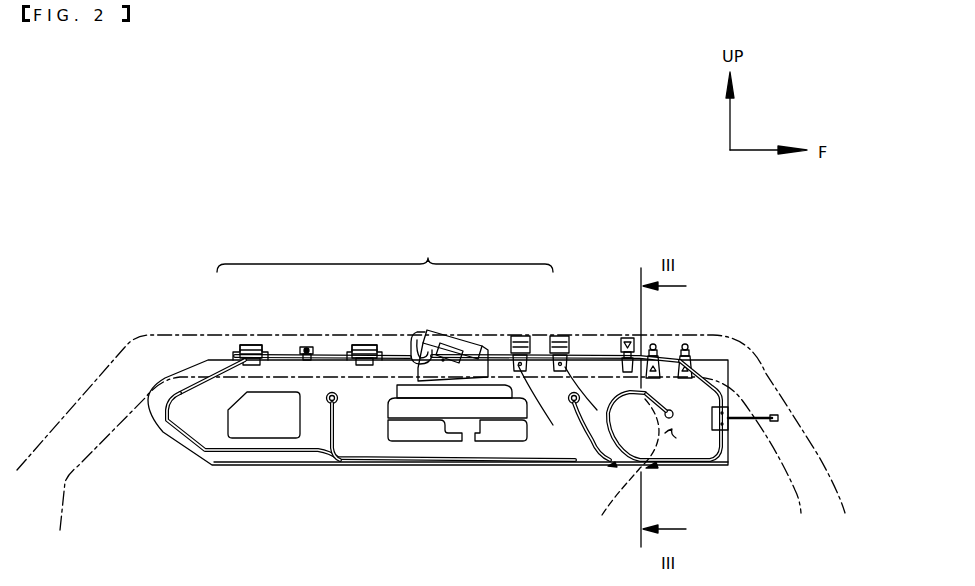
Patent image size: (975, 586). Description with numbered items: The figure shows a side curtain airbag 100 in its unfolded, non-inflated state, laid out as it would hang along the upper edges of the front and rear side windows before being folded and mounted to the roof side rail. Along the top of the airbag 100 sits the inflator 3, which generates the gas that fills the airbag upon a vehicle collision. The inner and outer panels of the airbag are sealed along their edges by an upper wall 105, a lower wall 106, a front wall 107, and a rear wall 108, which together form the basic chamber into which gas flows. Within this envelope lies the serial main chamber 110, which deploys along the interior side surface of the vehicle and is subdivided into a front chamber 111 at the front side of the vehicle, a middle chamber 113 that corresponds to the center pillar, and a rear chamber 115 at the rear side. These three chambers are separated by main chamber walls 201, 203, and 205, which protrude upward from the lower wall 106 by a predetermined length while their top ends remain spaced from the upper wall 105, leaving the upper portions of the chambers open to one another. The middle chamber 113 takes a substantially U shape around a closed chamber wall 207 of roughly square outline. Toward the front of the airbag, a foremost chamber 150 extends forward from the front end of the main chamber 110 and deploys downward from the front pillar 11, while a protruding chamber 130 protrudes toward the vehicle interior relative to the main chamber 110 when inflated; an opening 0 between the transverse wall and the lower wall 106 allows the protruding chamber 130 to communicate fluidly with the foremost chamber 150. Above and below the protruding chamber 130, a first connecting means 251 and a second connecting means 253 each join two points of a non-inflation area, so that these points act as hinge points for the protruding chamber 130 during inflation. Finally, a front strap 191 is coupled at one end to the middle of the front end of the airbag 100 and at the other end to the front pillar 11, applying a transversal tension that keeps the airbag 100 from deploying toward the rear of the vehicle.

The side curtain airbag 100 is at (591, 334).
The main chamber 110 is at (385, 253).
The rear chamber 115 is at (225, 393).
The inflator 3 is at (430, 333).
The middle chamber 113 is at (514, 350).
The front chamber 111 is at (555, 350).
The lower wall 106 is at (603, 357).
The rear wall 108 is at (147, 400).
The front pillar 11 is at (797, 445).
The upper wall 105 is at (478, 463).
The closed chamber wall 207 is at (418, 442).
The main chamber wall 205 is at (318, 434).
The main chamber wall 203 is at (568, 434).
The foremost chamber 150 is at (733, 405).
The protruding chamber 130 is at (639, 425).
The front wall 107 is at (700, 415).
The opening 0 is at (676, 438).
The front strap 191 is at (727, 437).
The main chamber wall 201 is at (621, 470).
The first connecting means 251 is at (690, 357).
The second connecting means 253 is at (650, 469).